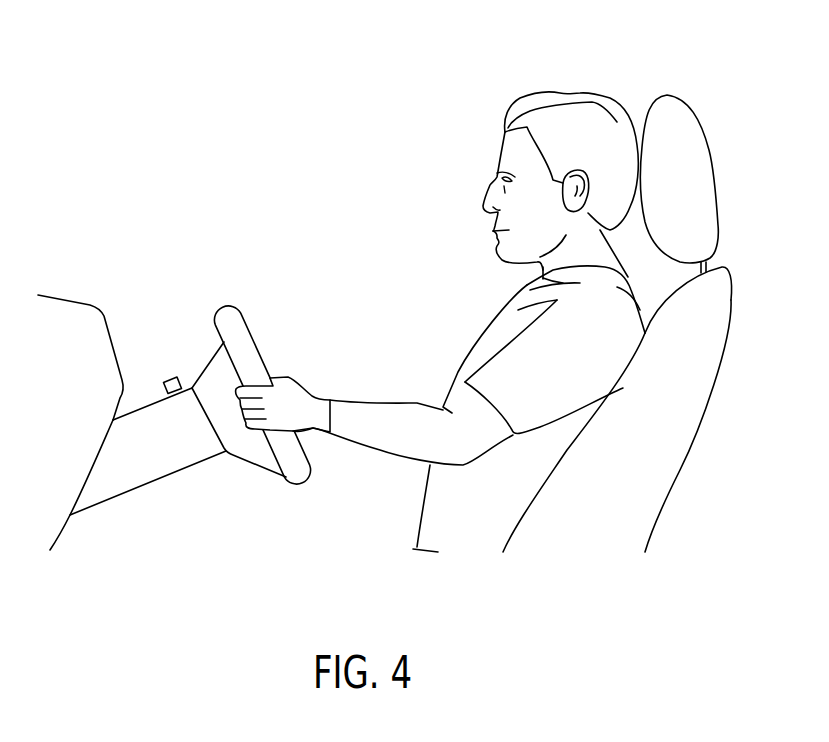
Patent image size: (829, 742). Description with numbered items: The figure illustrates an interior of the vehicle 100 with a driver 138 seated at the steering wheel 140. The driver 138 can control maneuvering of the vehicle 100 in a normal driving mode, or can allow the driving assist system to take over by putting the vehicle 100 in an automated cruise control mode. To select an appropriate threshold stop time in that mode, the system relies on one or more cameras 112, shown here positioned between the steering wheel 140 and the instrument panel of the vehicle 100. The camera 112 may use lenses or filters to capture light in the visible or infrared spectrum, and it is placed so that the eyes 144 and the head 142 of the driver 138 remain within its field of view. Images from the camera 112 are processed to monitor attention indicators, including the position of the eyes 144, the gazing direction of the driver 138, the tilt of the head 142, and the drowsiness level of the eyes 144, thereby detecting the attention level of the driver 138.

The vehicle 100 is at (237, 165).
The camera 112 is at (170, 377).
The driver 138 is at (622, 90).
The steering wheel 140 is at (242, 311).
The head 142 is at (500, 147).
The eyes 144 is at (498, 178).